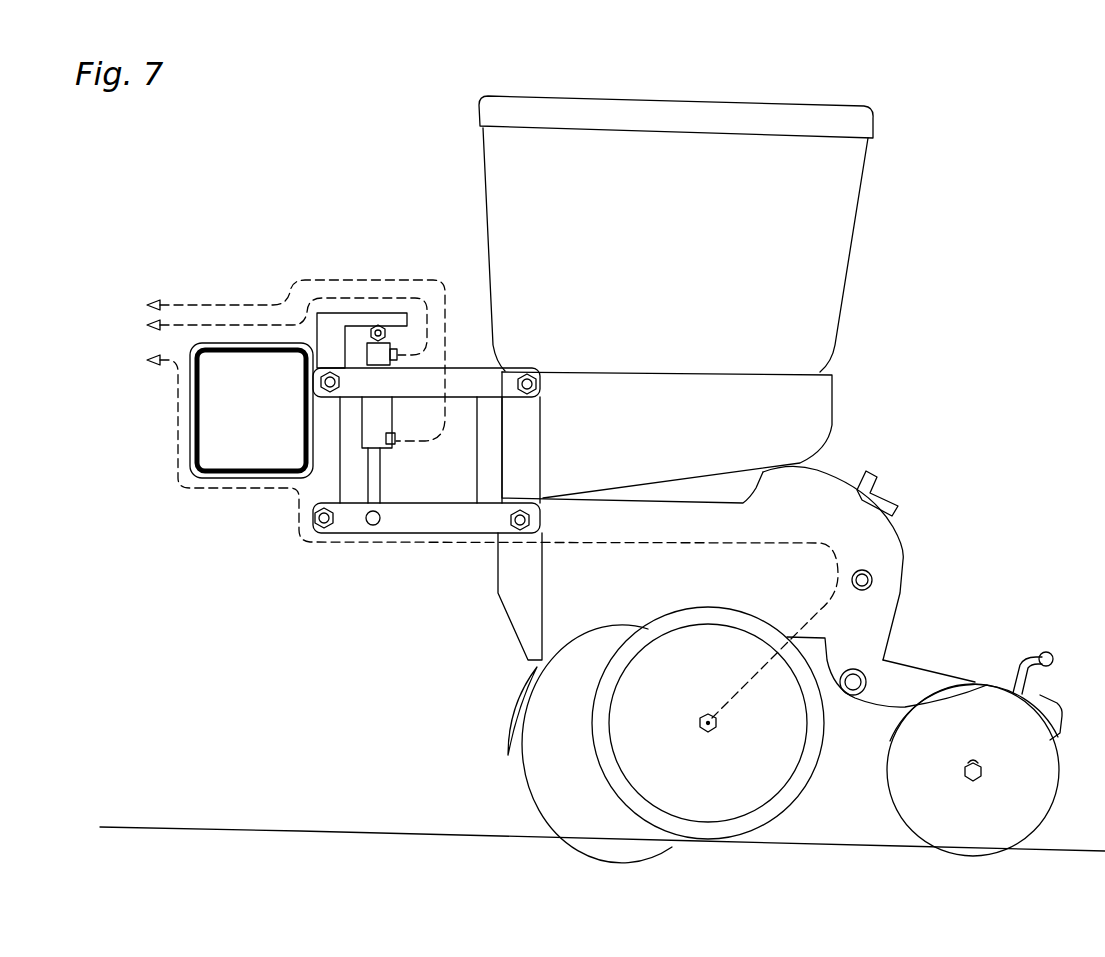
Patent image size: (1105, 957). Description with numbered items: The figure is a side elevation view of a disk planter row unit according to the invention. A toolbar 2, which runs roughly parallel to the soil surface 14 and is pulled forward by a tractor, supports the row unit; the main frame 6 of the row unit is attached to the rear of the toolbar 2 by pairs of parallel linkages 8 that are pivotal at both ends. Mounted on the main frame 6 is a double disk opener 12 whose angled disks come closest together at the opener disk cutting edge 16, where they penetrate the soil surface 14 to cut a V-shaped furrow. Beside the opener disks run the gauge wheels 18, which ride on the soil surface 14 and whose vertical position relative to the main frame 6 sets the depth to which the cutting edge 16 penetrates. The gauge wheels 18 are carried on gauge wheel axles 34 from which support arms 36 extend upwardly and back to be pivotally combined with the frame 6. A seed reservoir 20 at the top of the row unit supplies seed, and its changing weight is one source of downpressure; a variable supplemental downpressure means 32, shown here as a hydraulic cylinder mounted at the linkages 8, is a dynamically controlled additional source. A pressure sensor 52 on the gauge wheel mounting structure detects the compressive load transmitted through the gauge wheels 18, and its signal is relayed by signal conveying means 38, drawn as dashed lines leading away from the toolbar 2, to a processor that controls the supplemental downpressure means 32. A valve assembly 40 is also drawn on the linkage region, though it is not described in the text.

The toolbar 2 is at (258, 476).
The main frame 6 is at (832, 469).
The parallel linkages 8 is at (477, 402).
The double disk opener 12 is at (521, 777).
The soil surface 14 is at (369, 826).
The opener disk cutting edge 16 is at (546, 835).
The gauge wheels 18 is at (796, 807).
The seed reservoir 20 is at (850, 279).
The supplemental downpressure means 32 is at (397, 450).
The gauge wheel axles 34 is at (719, 734).
The support arms 36 is at (838, 648).
The signal conveying means 38 is at (220, 492).
The control valve 40 is at (347, 296).
The pressure sensor 52 is at (915, 560).